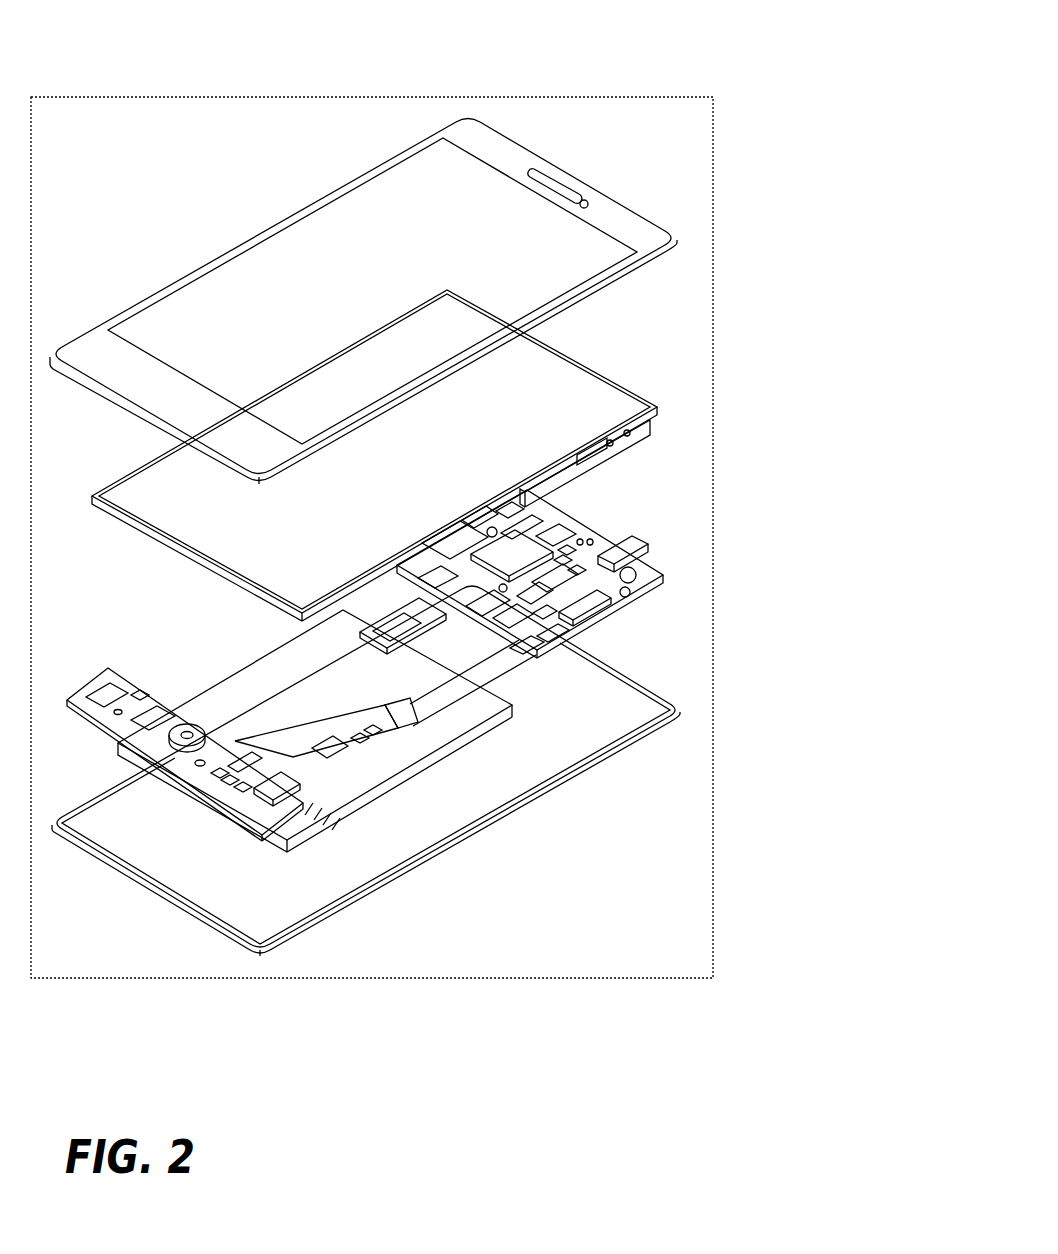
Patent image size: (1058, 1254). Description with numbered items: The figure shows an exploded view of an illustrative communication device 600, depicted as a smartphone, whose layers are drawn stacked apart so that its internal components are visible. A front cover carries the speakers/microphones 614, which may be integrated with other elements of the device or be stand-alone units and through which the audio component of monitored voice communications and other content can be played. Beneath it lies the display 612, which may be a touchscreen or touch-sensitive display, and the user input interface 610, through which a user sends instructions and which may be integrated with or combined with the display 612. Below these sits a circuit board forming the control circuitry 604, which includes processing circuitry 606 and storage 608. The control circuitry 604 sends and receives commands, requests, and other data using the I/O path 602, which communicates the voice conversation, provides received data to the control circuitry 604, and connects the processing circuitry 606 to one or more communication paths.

The communication device 600 is at (487, 56).
The I/O path 602 is at (300, 778).
The control circuitry 604 is at (597, 646).
The processing circuitry 606 is at (597, 578).
The storage 608 is at (600, 605).
The user input interface 610 is at (598, 410).
The display 612 is at (636, 414).
The speakers/microphones 614 is at (562, 185).